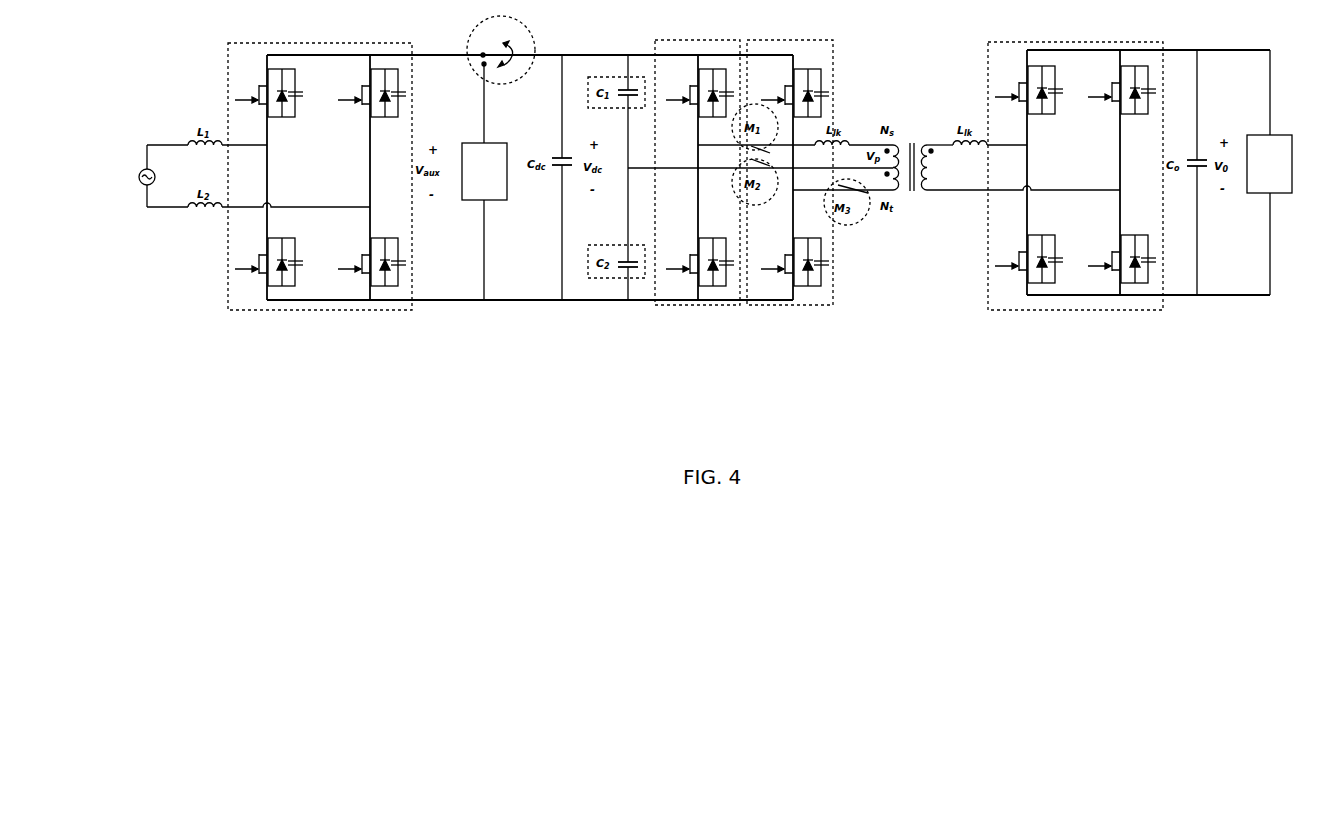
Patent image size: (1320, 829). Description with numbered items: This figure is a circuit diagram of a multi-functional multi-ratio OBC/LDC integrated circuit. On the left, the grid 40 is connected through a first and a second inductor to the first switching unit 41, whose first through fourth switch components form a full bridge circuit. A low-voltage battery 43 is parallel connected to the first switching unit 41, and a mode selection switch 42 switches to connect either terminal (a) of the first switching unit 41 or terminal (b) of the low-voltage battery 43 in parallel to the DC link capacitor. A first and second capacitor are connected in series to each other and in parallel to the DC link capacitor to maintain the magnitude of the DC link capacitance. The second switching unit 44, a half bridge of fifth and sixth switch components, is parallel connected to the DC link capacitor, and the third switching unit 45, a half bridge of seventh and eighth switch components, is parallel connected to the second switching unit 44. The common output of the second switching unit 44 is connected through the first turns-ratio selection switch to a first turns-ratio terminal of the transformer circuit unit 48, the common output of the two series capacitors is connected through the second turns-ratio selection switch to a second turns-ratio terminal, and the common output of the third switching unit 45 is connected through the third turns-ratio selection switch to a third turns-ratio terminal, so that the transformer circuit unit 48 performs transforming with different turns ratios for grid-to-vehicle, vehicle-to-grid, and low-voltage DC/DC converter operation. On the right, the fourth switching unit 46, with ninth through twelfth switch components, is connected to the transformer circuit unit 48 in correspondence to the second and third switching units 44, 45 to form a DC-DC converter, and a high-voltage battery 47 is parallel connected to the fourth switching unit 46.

The grid 40 is at (145, 190).
The first switching unit 41 is at (353, 43).
The mode selection switch 42 is at (535, 32).
The low-voltage battery 43 is at (497, 203).
The second switching unit 44 is at (708, 307).
The third switching unit 45 is at (773, 307).
The fourth switching unit 46 is at (1103, 40).
The high-voltage battery 47 is at (1273, 133).
The transformer circuit unit 48 is at (917, 128).